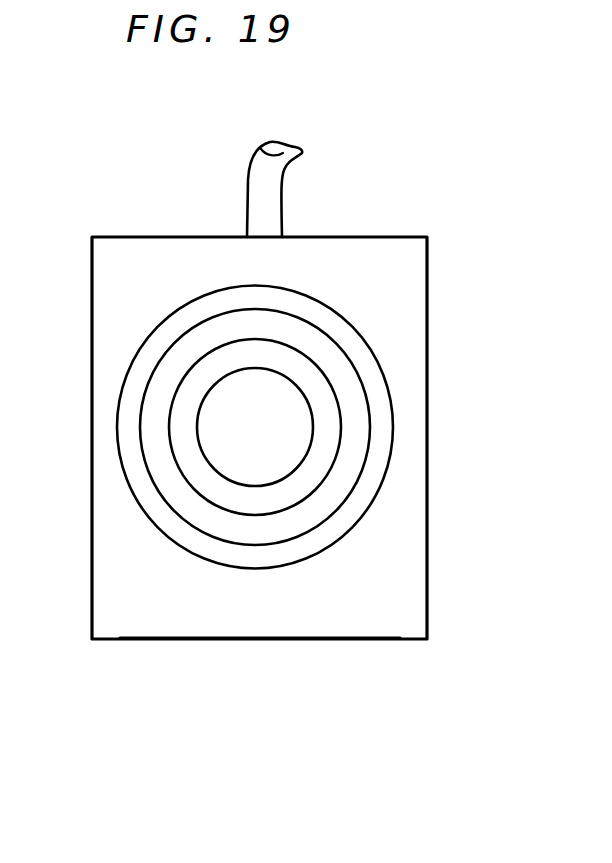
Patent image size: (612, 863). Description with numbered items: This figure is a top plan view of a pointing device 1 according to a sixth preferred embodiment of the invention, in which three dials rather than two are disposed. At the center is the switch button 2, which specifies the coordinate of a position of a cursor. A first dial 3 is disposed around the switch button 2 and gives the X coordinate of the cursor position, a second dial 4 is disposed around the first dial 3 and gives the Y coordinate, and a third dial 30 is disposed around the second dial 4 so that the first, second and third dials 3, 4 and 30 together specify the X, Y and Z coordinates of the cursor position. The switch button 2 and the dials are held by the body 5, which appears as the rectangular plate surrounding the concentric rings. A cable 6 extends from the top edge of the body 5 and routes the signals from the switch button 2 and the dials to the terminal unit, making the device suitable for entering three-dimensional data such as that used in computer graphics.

The pointing device 1 is at (153, 190).
The switch button 2 is at (265, 427).
The first dial 3 is at (323, 395).
The second dial 4 is at (357, 417).
The body 5 is at (280, 618).
The cable 6 is at (262, 201).
The third dial 30 is at (372, 467).